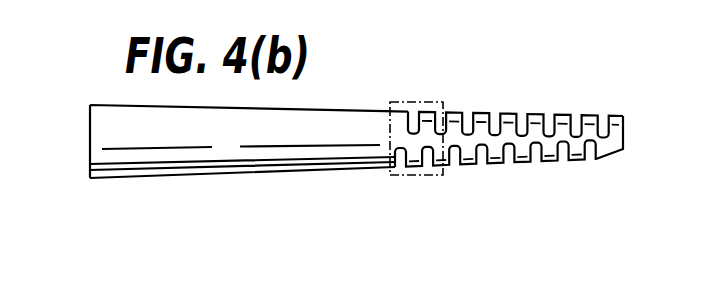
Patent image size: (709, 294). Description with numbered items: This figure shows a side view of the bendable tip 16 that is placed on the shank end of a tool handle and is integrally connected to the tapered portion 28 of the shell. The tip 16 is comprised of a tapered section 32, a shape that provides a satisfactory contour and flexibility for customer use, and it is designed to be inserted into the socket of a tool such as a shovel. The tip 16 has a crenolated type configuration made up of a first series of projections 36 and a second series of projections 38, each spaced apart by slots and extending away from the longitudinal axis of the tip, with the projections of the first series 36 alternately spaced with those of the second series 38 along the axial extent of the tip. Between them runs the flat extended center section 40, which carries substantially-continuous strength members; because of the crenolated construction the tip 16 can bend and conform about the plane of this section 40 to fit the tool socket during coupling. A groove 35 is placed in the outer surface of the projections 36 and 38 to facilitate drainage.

The bendable tip 16 is at (517, 74).
The tapered portion 28 is at (282, 163).
The tapered section 32 is at (518, 160).
The groove 35 is at (619, 117).
The first series of projections 36 is at (510, 122).
The second series of projections 38 is at (465, 160).
The flat extended center section 40 is at (565, 123).